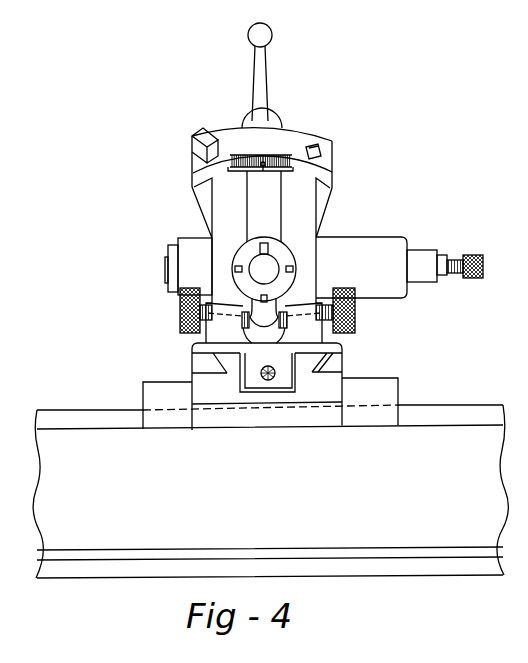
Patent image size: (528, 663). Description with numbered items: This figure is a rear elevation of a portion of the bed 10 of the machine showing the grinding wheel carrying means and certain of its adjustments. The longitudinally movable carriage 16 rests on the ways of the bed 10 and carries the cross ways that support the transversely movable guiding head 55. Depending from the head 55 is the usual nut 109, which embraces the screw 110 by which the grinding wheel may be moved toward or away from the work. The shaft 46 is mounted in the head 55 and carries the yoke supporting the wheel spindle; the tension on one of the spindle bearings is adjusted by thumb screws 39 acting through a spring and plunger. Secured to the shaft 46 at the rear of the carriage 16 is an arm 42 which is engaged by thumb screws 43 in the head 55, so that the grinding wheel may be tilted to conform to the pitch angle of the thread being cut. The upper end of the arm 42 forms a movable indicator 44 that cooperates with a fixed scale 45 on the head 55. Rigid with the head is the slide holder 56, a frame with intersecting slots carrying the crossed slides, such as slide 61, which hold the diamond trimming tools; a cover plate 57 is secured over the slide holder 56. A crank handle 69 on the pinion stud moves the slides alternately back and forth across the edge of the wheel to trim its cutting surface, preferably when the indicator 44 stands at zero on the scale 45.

The bed 10 is at (270, 491).
The carriage 16 is at (365, 390).
The thumb screws 39 is at (473, 253).
The arm 42 is at (273, 312).
The thumb screws 43 is at (355, 321).
The indicator 44 is at (253, 173).
The scale 45 is at (288, 156).
The shaft 46 is at (272, 265).
The guiding head 55 is at (303, 225).
The slide holder 56 is at (261, 153).
The cover plate 57 is at (295, 133).
The slide 61 is at (195, 128).
The crank handle 69 is at (268, 78).
The nut 109 is at (285, 373).
The screw 110 is at (262, 375).